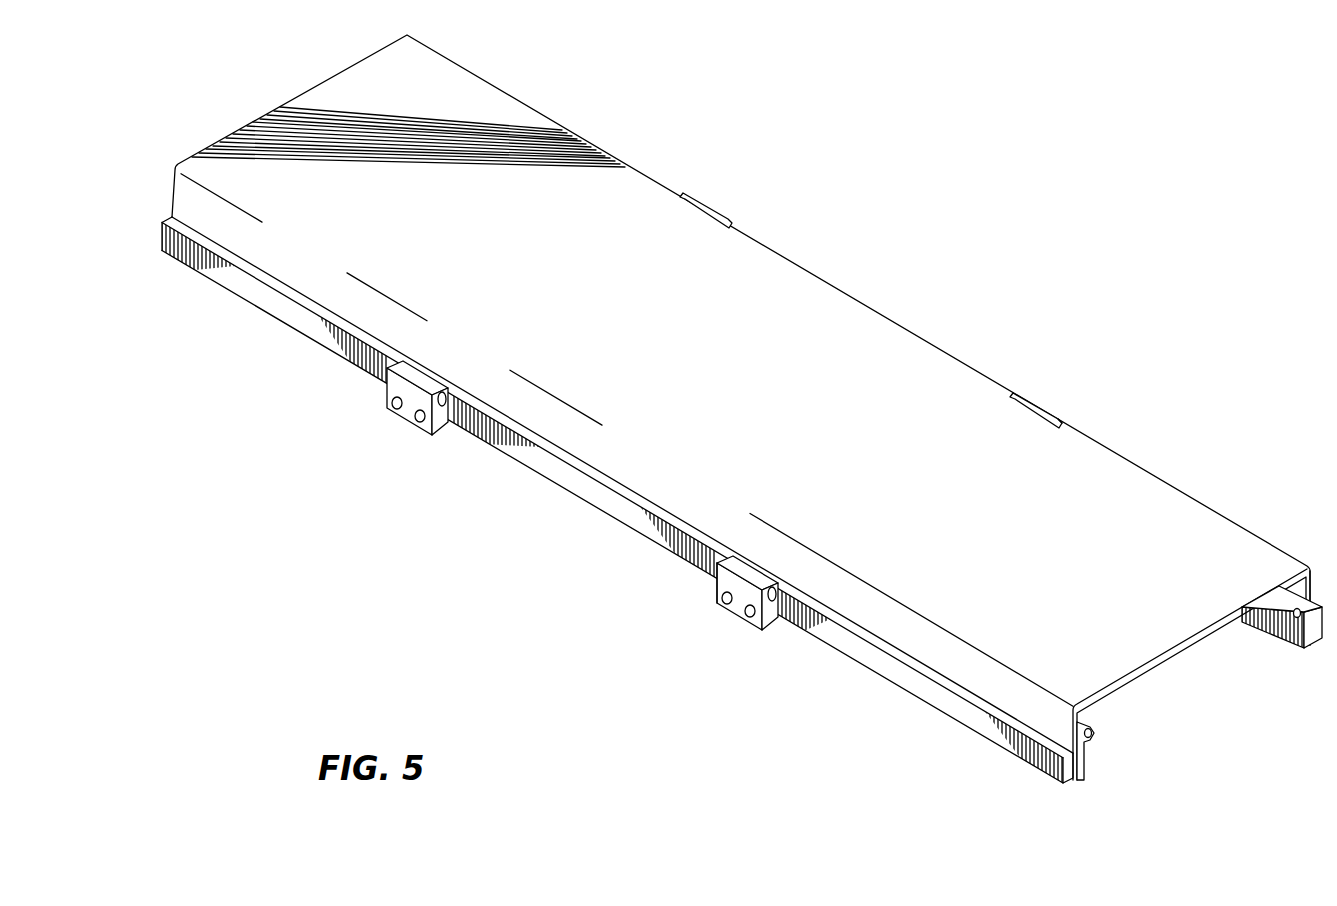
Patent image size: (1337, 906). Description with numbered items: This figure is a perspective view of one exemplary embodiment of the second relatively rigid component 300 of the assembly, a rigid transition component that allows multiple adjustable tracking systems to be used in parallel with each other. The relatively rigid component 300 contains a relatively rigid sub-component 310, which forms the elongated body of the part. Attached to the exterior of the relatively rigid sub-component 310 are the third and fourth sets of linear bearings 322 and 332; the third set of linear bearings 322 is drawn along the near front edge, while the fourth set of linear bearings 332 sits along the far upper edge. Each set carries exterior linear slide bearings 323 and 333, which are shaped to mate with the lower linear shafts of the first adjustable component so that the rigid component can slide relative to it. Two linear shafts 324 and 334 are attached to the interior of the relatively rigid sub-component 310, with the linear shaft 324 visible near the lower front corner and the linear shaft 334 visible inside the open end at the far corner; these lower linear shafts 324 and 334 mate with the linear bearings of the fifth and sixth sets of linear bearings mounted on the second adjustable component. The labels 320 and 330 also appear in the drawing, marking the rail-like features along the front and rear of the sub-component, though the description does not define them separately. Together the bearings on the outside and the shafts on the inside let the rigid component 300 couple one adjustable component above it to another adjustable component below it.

The second relatively rigid component 300 is at (997, 235).
The relatively rigid sub-component 310 is at (392, 185).
The rail 320 is at (990, 745).
The third set of linear bearings 322 is at (716, 591).
The exterior linear slide bearing 323 is at (383, 403).
The linear shaft 324 is at (1084, 770).
The rear wall 330 is at (1320, 616).
The fourth set of linear bearings 332 is at (1053, 407).
The exterior linear slide bearing 333 is at (716, 210).
The linear shaft 334 is at (1300, 650).